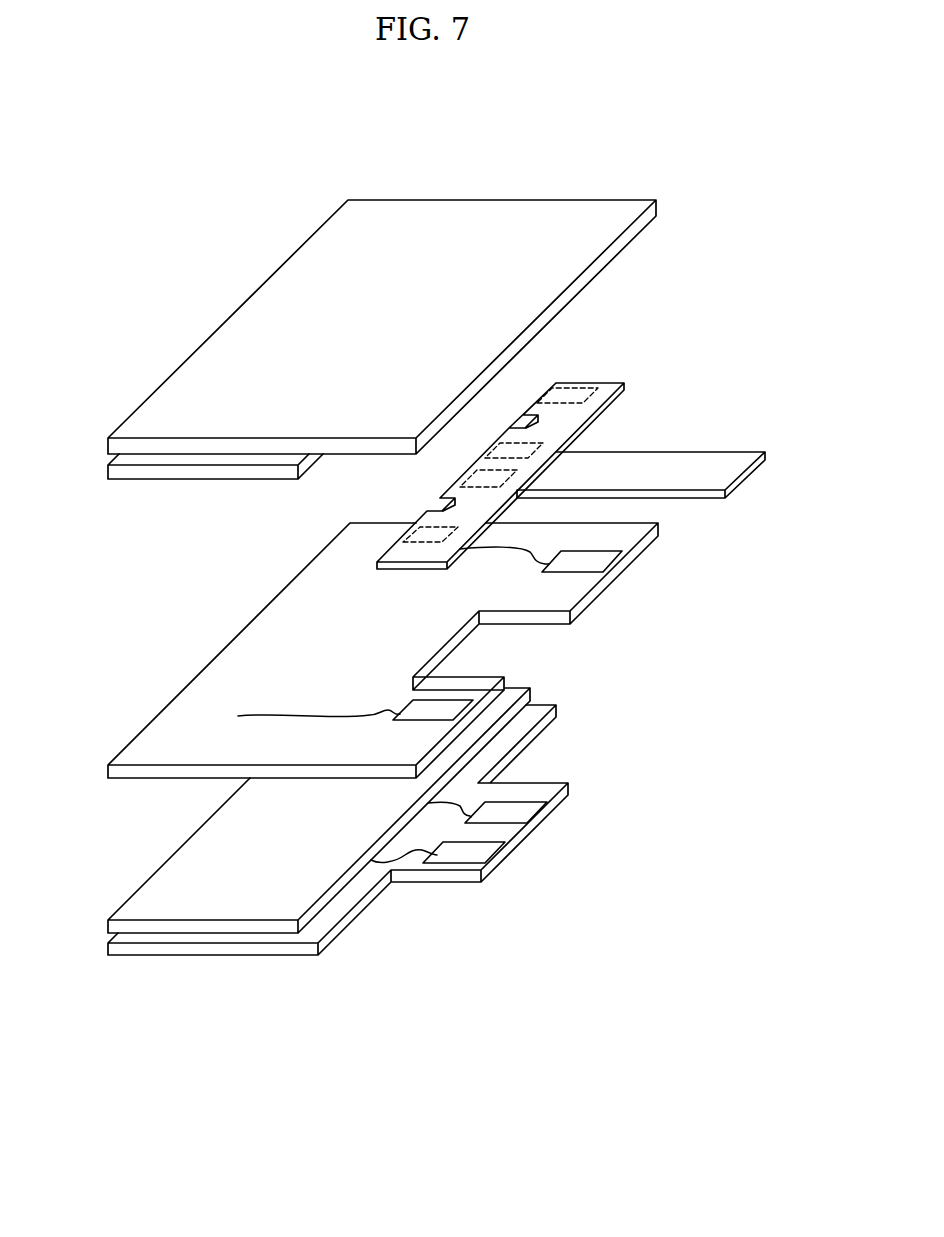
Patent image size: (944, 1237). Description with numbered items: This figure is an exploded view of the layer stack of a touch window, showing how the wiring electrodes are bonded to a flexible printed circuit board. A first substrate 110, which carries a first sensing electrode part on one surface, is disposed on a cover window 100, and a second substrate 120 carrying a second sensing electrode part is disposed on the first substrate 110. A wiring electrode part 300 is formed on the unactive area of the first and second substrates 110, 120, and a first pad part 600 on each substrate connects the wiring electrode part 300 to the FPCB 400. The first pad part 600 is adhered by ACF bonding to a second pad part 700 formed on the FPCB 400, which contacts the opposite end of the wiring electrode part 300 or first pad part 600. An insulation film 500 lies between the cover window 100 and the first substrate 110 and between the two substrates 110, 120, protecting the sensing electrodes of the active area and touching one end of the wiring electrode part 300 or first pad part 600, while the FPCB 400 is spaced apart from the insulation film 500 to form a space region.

The cover window 100 is at (600, 212).
The first substrate 110 is at (150, 742).
The second substrate 120 is at (158, 955).
The wiring electrode part 300 is at (268, 715).
The FPCB 400 is at (717, 468).
The insulation film 500 is at (135, 480).
The first pad part 600 is at (595, 562).
The second pad part 700 is at (580, 388).